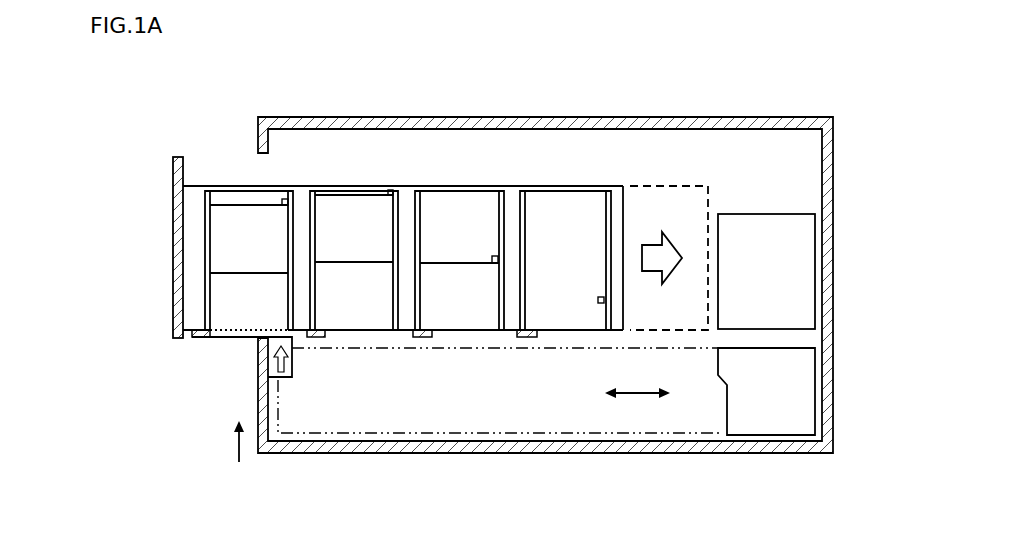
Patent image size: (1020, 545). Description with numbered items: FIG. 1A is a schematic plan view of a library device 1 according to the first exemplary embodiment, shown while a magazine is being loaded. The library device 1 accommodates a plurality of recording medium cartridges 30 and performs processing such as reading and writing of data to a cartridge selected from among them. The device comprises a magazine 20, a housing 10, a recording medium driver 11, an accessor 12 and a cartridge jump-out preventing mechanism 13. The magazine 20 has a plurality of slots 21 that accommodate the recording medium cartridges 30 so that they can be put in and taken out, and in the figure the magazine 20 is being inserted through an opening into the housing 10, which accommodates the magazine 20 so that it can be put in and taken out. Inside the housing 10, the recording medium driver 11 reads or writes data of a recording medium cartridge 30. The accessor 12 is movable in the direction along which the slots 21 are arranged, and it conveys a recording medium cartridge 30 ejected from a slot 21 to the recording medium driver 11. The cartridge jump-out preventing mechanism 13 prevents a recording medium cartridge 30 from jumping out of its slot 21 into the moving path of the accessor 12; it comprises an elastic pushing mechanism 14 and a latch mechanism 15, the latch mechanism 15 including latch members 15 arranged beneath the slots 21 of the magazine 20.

The library device 1 is at (814, 94).
The housing 10 is at (828, 158).
The recording medium driver 11 is at (800, 265).
The accessor 12 is at (800, 385).
The cartridge jump-out preventing mechanism 13 is at (140, 353).
The elastic pushing mechanism 14 is at (270, 370).
The latch mechanism 15 is at (197, 340).
The magazine 20 is at (187, 247).
The slot 21 is at (207, 197).
The recording medium cartridge 30 is at (243, 297).